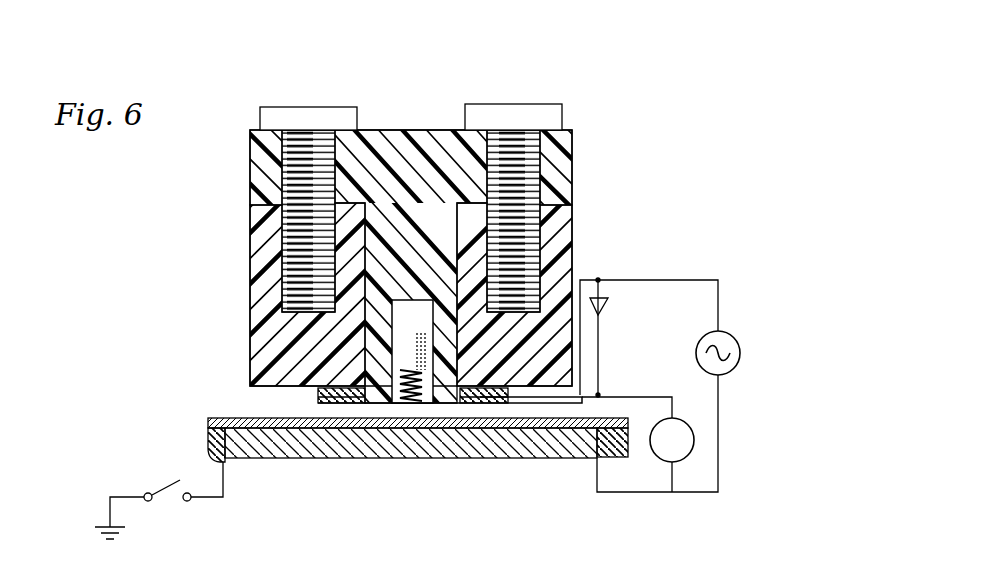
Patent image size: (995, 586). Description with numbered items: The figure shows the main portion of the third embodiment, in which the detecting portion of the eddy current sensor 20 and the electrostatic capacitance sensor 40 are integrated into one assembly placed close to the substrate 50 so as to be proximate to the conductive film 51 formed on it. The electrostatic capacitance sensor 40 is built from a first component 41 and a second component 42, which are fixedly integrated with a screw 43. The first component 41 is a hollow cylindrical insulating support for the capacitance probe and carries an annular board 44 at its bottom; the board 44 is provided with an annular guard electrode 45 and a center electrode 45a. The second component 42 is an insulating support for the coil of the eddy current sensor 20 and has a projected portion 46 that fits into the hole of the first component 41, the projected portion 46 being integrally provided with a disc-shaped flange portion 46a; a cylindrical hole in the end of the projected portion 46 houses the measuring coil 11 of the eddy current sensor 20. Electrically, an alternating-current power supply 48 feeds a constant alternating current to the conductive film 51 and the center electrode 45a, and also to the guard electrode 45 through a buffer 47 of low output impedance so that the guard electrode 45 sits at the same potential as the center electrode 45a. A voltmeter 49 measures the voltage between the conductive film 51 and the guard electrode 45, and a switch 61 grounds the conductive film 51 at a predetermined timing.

The measuring coil 11 is at (415, 404).
The eddy current sensor 20 is at (392, 330).
The electrostatic capacitance displacement sensor 40 is at (394, 112).
The first component 41 is at (251, 255).
The second component 42 is at (251, 172).
The screw 43 is at (305, 106).
The annular board 44 is at (318, 392).
The annular guard electrode 45 is at (323, 404).
The center electrode 45a is at (337, 404).
The projected portion 46 is at (425, 240).
The flange portion 46a is at (572, 167).
The buffer 47 is at (610, 308).
The alternating-current power supply 48 is at (740, 353).
The voltmeter 49 is at (694, 440).
The substrate 50 is at (463, 460).
The conductive film 51 is at (213, 418).
The switch 61 is at (164, 482).